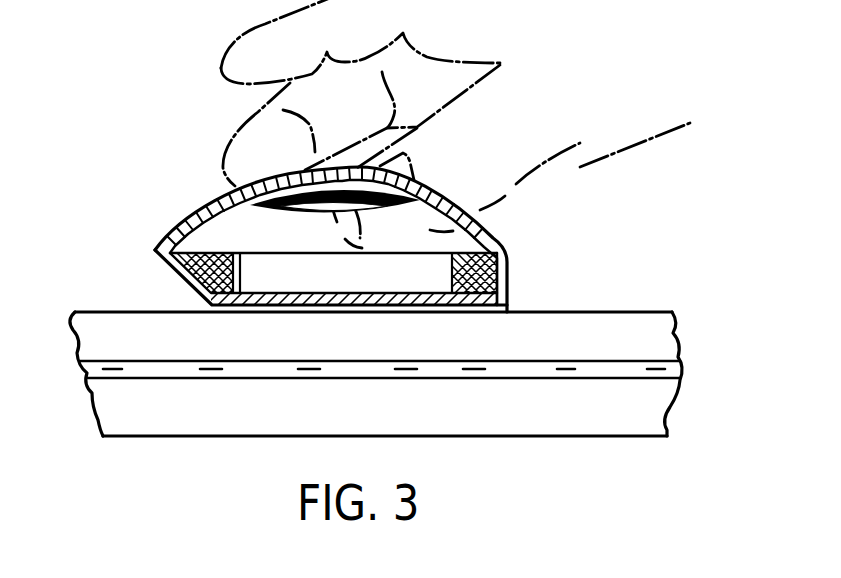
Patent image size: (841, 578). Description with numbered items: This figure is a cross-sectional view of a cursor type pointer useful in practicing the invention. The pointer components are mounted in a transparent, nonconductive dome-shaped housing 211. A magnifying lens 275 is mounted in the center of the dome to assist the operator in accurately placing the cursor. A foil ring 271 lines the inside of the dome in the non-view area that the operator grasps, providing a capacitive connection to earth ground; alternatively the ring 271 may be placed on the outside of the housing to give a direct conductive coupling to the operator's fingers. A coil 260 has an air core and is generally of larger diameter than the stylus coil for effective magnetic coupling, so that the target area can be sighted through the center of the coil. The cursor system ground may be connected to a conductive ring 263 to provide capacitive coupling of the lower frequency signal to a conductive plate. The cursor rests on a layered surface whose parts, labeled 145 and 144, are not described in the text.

The dome-shaped housing 211 is at (198, 203).
The magnifying lens 275 is at (305, 215).
The foil ring 271 is at (348, 225).
The coil 260 is at (500, 275).
The conductive ring 263 is at (320, 290).
The circuit board 145 is at (120, 311).
The substrate layer 144 is at (174, 362).